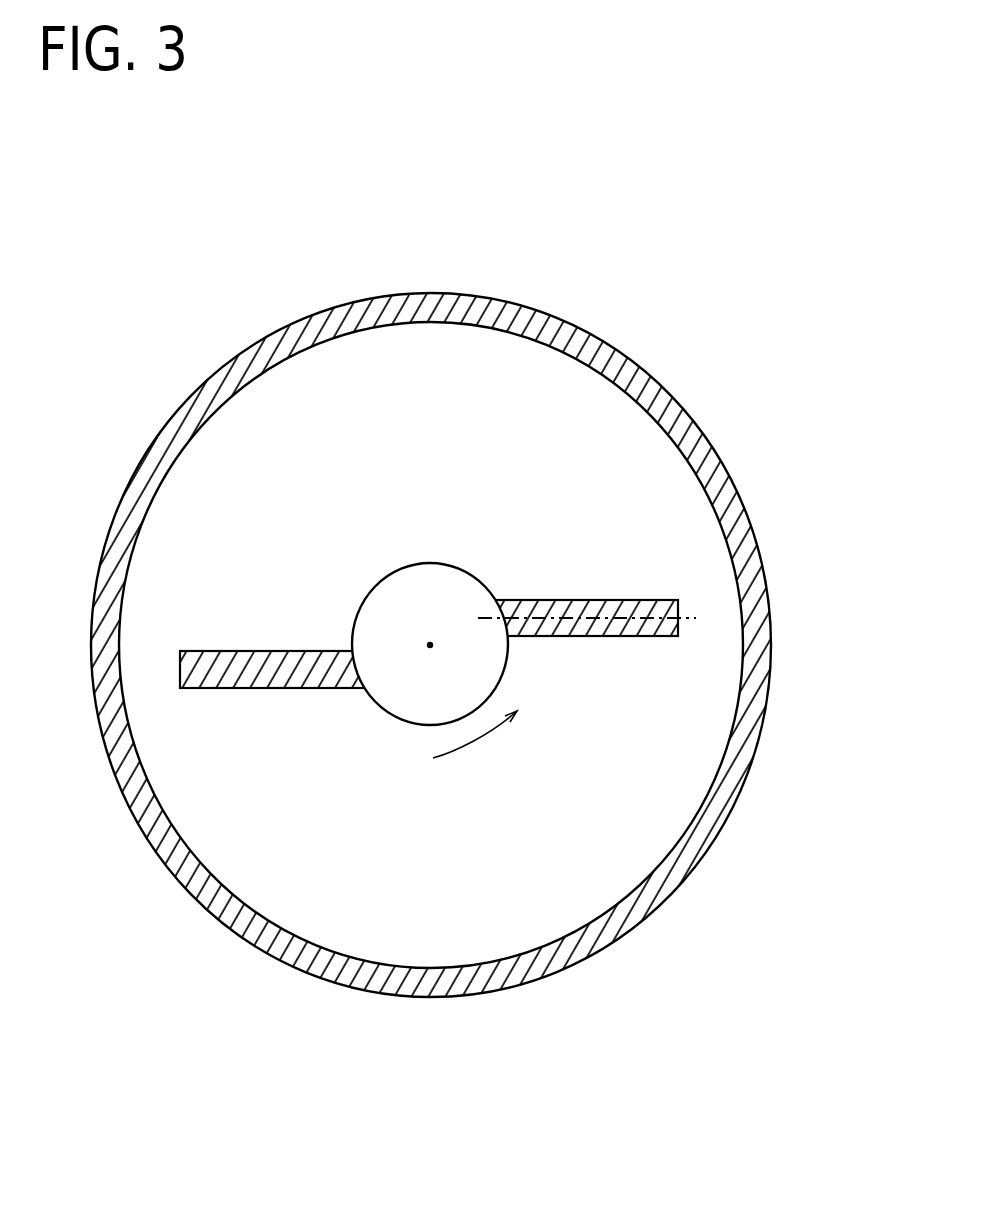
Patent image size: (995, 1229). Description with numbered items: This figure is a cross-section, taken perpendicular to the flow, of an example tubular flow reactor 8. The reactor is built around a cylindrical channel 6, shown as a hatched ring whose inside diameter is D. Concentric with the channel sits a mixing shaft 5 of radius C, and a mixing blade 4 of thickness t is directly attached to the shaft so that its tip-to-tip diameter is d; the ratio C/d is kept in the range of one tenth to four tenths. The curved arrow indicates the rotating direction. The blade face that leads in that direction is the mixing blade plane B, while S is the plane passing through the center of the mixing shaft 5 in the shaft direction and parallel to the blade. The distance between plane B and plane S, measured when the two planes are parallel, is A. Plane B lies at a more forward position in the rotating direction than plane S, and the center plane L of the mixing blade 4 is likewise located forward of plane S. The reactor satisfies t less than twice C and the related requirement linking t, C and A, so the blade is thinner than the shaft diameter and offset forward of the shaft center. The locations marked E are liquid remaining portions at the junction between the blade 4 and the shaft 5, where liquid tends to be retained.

The mixing blade 4 is at (262, 690).
The mixing shaft 5 is at (398, 585).
The cylindrical channel 6 is at (758, 628).
The tubular flow reactor 8 is at (803, 258).
The inside diameter of the cylindrical channel D is at (746, 645).
The diameter of the mixing blade d is at (678, 600).
The distance between plane B and plane S A is at (430, 645).
The thickness of the mixing blade t is at (223, 722).
The radius of the mixing shaft C is at (430, 563).
The mixing blade plane facing toward the rotating direction B is at (562, 600).
The center plane of the mixing blade L is at (477, 618).
The plane passing through the center of the mixing shaft S is at (592, 650).
The liquid remaining portion E is at (499, 593).